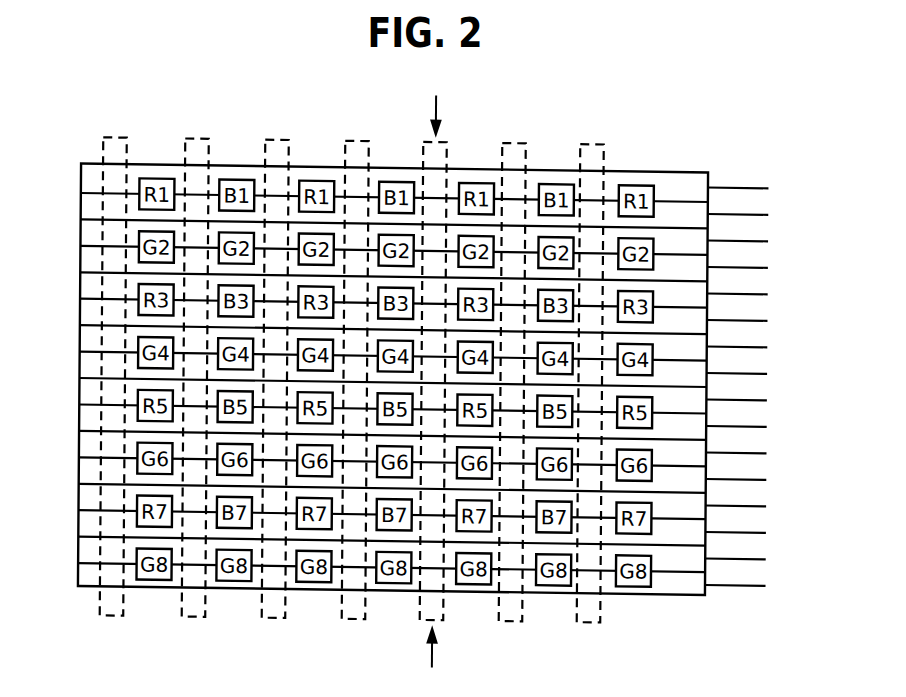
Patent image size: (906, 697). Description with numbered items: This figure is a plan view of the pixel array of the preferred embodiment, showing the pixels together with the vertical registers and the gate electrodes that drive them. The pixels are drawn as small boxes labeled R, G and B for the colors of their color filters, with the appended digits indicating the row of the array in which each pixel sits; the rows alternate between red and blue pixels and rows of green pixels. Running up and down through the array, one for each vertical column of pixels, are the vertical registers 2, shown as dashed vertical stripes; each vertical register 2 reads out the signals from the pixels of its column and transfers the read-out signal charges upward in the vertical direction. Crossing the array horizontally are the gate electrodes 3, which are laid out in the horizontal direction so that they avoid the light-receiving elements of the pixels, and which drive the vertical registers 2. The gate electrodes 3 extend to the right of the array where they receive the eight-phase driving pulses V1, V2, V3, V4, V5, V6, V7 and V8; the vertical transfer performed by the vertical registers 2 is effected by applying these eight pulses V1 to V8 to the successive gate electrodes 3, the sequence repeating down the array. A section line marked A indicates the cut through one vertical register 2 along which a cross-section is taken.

The vertical register 2 is at (112, 624).
The gate electrode 3 is at (81, 256).
The section line A-A' A is at (433, 381).
The driving pulse V1 is at (753, 479).
The driving pulse V2 is at (753, 452).
The driving pulse V3 is at (753, 426).
The driving pulse V4 is at (754, 399).
The driving pulse V5 is at (754, 373).
The driving pulse V6 is at (754, 346).
The driving pulse V7 is at (754, 320).
The driving pulse V8 is at (754, 293).